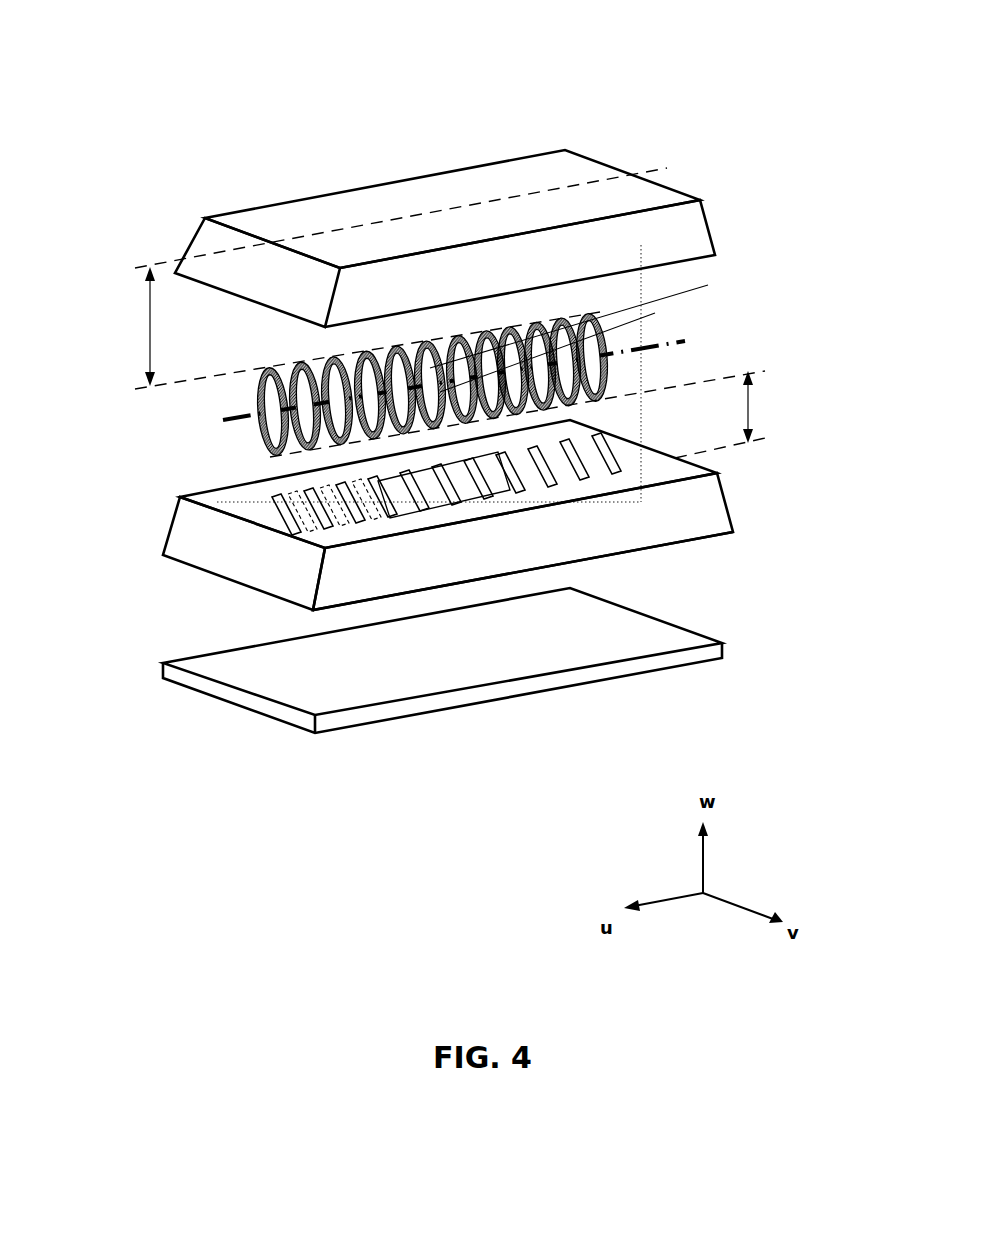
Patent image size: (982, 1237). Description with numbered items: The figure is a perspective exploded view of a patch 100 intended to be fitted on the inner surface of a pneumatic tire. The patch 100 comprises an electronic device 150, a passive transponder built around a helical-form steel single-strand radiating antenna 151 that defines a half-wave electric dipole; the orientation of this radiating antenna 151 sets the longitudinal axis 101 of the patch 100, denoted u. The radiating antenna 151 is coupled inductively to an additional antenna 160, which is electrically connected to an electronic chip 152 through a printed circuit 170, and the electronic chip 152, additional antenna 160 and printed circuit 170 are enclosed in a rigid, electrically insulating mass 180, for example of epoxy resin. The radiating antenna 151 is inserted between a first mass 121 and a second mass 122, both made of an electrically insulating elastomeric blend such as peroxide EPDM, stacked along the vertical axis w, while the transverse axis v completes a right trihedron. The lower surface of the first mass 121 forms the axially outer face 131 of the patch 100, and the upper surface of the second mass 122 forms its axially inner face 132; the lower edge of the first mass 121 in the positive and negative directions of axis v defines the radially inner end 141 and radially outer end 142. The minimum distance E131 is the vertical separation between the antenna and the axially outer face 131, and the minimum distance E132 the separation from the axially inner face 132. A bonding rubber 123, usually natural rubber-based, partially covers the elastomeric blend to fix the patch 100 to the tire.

The patch 100 is at (431, 115).
The second mass 122 is at (272, 273).
The axially inner face 132 is at (413, 193).
The electronic device 150 is at (464, 273).
The rigid and electrically insulating mass 180 is at (595, 322).
The additional antenna 160 is at (576, 348).
The longitudinal axis 101 is at (612, 355).
The printed circuit 170 is at (430, 368).
The electronic chip 152 is at (440, 398).
The radiating antenna 151 is at (532, 382).
The radially outer end 142 is at (163, 553).
The first mass 121 is at (667, 512).
The radially inner end 141 is at (600, 558).
The axially outer face 131 is at (275, 598).
The bonding rubber 123 is at (410, 667).
The minimum distance E132 is at (367, 328).
The minimum distance E131 is at (539, 414).